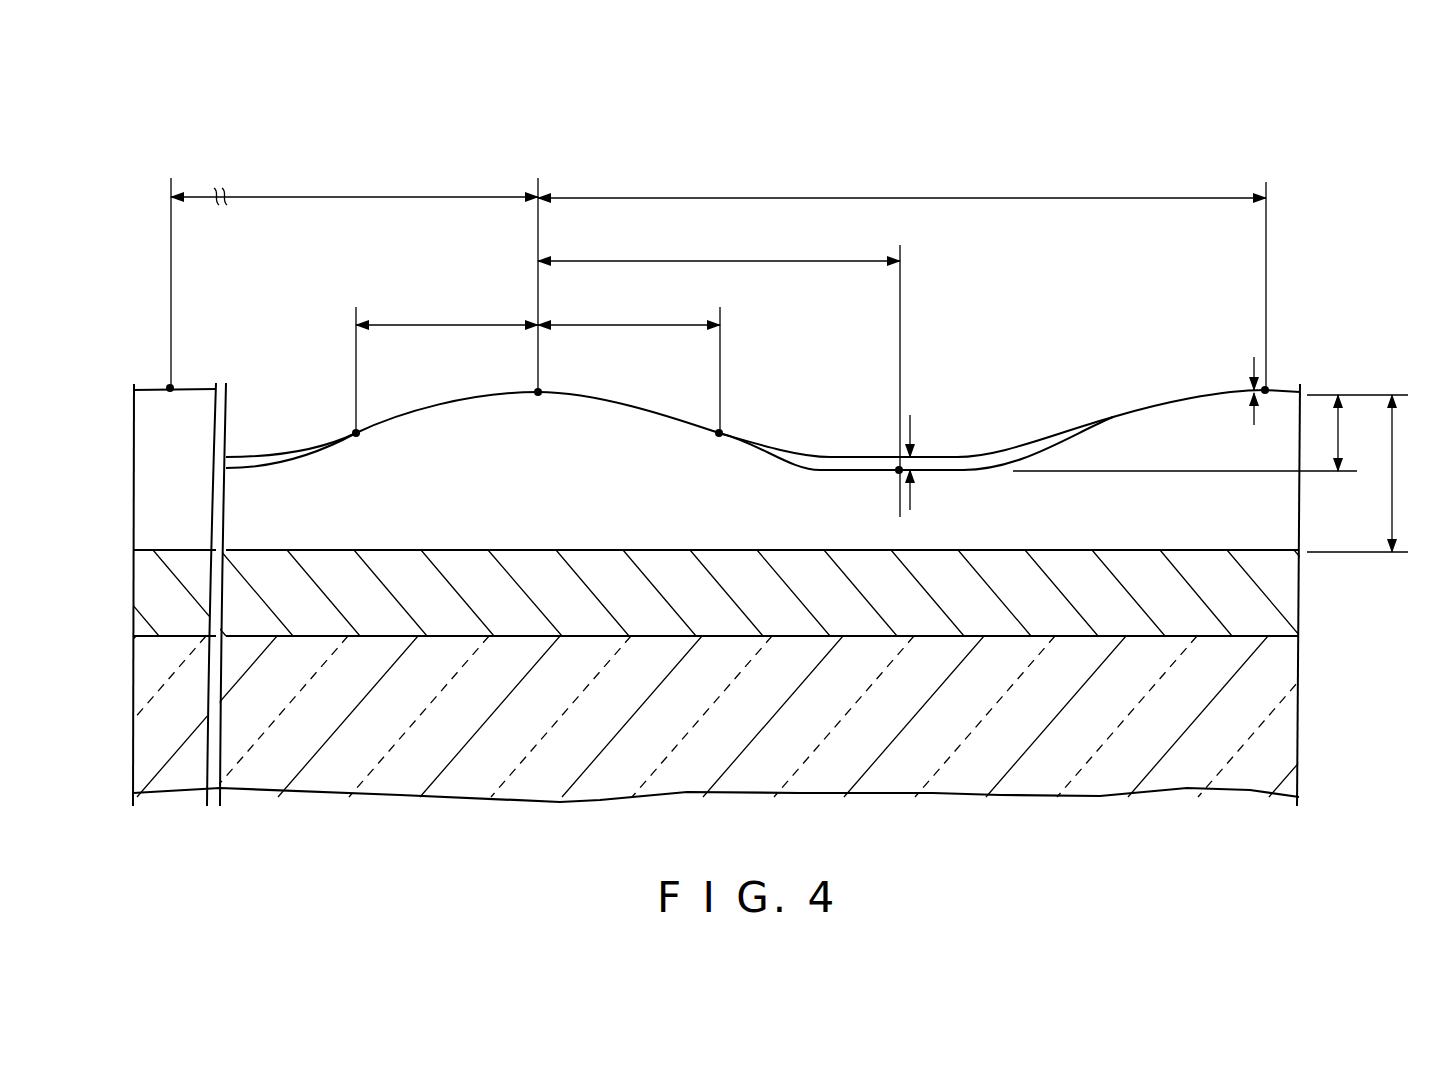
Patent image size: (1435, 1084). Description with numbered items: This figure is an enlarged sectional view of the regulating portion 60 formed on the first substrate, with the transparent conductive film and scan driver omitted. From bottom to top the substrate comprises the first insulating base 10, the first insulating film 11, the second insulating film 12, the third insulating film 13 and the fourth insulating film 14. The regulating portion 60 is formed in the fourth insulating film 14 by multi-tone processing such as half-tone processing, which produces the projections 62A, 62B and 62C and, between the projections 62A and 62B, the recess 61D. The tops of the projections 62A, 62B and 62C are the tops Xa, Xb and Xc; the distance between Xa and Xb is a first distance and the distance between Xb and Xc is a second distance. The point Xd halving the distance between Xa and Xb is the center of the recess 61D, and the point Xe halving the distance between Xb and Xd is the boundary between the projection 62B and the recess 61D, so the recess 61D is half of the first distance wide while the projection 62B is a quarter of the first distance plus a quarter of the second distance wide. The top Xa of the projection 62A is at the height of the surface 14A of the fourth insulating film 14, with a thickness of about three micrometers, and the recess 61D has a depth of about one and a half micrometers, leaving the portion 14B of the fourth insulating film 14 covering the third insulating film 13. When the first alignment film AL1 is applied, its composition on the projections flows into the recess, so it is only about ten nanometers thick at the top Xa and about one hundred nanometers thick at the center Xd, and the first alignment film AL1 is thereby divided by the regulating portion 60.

The regulating portion 60 is at (1143, 163).
The first insulating base 10 is at (1288, 714).
The first insulating film 11 is at (723, 593).
The second insulating film 12 is at (723, 593).
The third insulating film 13 is at (1288, 590).
The fourth insulating film 14 is at (1042, 506).
The surface of the fourth insulating film 14A is at (1288, 388).
The portion of the fourth insulating film 14B is at (963, 528).
The projection 62A is at (1176, 412).
The projection 62B is at (476, 393).
The projection 62C is at (148, 388).
The recess 61D is at (962, 478).
The first alignment film AL1 is at (1015, 448).